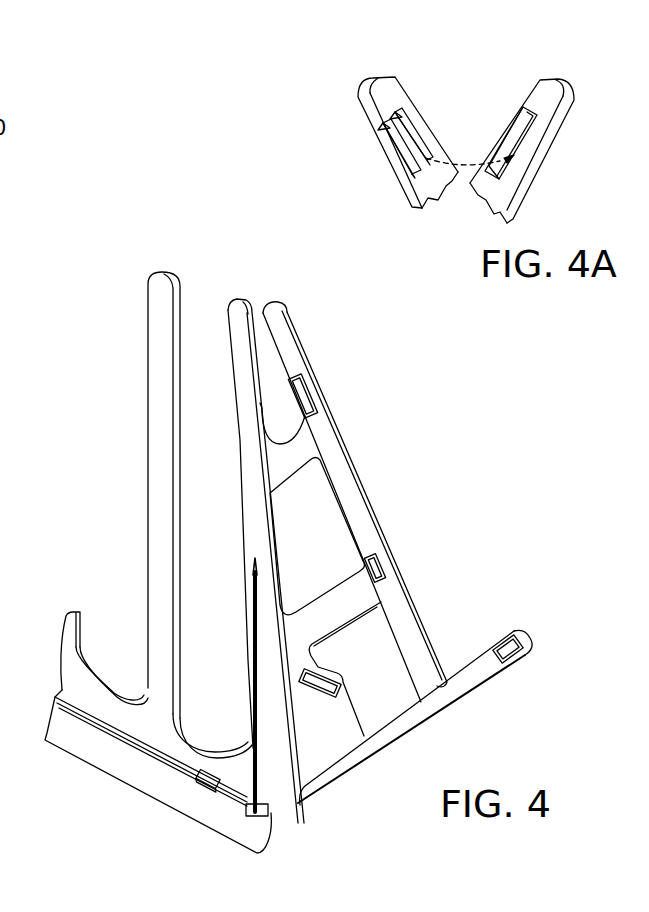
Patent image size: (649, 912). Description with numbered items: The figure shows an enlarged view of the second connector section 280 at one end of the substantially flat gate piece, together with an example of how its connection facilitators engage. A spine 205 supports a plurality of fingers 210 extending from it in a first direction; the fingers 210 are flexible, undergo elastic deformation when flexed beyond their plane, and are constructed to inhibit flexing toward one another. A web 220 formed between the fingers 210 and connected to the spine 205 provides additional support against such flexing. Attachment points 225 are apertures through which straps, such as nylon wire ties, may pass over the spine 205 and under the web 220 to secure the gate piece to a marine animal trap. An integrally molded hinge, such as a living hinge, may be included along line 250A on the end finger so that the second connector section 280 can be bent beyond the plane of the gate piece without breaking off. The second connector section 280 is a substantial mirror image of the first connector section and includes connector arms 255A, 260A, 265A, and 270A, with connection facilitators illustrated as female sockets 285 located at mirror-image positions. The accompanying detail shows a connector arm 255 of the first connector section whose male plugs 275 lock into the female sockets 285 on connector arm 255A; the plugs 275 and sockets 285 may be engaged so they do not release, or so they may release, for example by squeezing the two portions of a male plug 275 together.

In FIG. 4, the spine 205 is at (88, 752).
In FIG. 4, the fingers 210 is at (170, 277).
In FIG. 4, the web 220 is at (183, 740).
In FIG. 4, the attachment points 225 is at (205, 780).
In FIG. 4, the line 250A is at (278, 637).
In FIG. 4A, the connector arm 255 is at (408, 193).
In FIG. 4, the connector arm 255A is at (400, 747).
In FIG. 4A, the connector arm 255A is at (517, 208).
In FIG. 4, the connector arm 260A is at (362, 497).
In FIG. 4, the connector arm 265A is at (350, 614).
In FIG. 4, the connector arm 270A is at (294, 473).
In FIG. 4A, the male plugs 275 is at (417, 127).
In FIG. 4, the second connector section 280 is at (372, 368).
In FIG. 4, the female sockets 285 is at (308, 393).
In FIG. 4A, the female sockets 285 is at (523, 130).